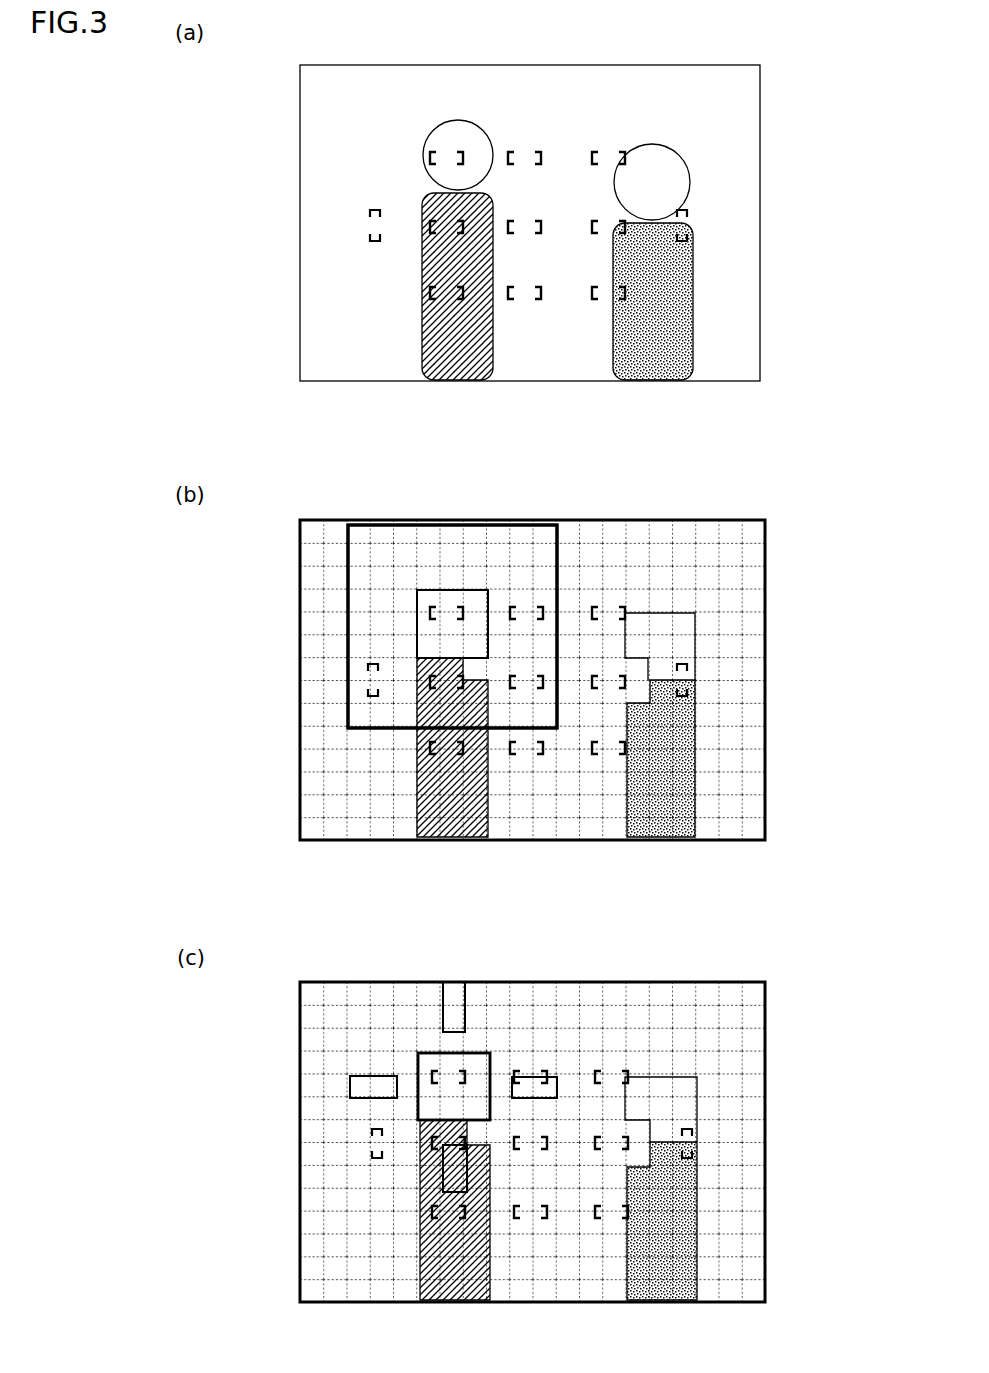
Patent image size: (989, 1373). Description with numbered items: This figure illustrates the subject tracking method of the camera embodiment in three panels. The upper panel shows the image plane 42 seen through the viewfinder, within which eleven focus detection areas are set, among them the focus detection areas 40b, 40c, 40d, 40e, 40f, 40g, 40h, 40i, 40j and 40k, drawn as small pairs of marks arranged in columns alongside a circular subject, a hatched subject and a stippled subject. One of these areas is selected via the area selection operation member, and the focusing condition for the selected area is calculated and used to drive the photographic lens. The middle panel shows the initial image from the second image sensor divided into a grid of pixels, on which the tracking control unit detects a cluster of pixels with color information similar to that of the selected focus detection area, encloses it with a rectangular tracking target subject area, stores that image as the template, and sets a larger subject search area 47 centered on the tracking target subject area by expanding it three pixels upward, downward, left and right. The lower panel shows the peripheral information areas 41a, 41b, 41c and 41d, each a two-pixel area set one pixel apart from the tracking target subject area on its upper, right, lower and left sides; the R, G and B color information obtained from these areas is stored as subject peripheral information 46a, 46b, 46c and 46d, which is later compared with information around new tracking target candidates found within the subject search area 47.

The image plane 42 is at (763, 100).
The focus detection area 40b is at (526, 153).
The focus detection area 40c is at (618, 150).
The focus detection area 40d is at (367, 212).
The focus detection area 40e is at (430, 225).
The focus detection area 40f is at (437, 265).
The focus detection area 40g is at (690, 258).
The focus detection area 40h is at (690, 223).
The focus detection area 40i is at (430, 337).
The focus detection area 40j is at (535, 300).
The focus detection area 40k is at (605, 305).
The subject search area 47 is at (348, 717).
The peripheral information area 41a is at (445, 1002).
The subject peripheral information 46a is at (394, 989).
The peripheral information area 41b is at (522, 1075).
The subject peripheral information 46b is at (599, 1022).
The peripheral information area 41c is at (440, 1185).
The subject peripheral information 46c is at (319, 1191).
The peripheral information area 41d is at (350, 1087).
The subject peripheral information 46d is at (284, 1103).